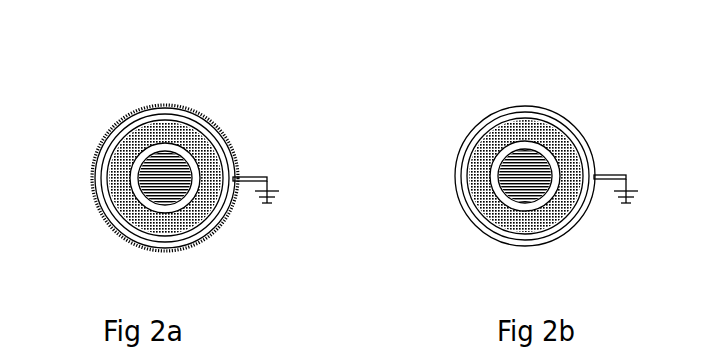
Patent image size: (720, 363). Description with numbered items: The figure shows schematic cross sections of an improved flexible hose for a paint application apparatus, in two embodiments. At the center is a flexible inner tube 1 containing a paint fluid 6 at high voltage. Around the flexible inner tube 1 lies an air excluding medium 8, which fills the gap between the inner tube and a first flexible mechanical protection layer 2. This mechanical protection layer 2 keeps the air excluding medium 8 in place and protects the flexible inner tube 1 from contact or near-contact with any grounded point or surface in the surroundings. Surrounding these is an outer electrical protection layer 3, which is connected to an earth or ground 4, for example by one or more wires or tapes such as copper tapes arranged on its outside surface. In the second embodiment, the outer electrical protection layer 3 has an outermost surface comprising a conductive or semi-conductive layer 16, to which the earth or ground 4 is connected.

In FIG. 2A, the flexible inner tube 1 is at (130, 178).
In FIG. 2B, the flexible inner tube 1 is at (533, 145).
In FIG. 2A, the first flexible mechanical protection layer 2 is at (122, 144).
In FIG. 2B, the first flexible mechanical protection layer 2 is at (573, 150).
In FIG. 2A, the outer electrical protection layer 3 is at (110, 222).
In FIG. 2B, the outer electrical protection layer 3 is at (590, 157).
In FIG. 2A, the earth or ground 4 is at (264, 218).
In FIG. 2B, the earth or ground 4 is at (636, 207).
In FIG. 2A, the paint fluid 6 is at (178, 162).
In FIG. 2B, the paint fluid 6 is at (502, 170).
In FIG. 2A, the air excluding medium 8 is at (177, 130).
In FIG. 2B, the air excluding medium 8 is at (502, 130).
In FIG. 2A, the conductive or semi-conductive layer 16 is at (98, 208).